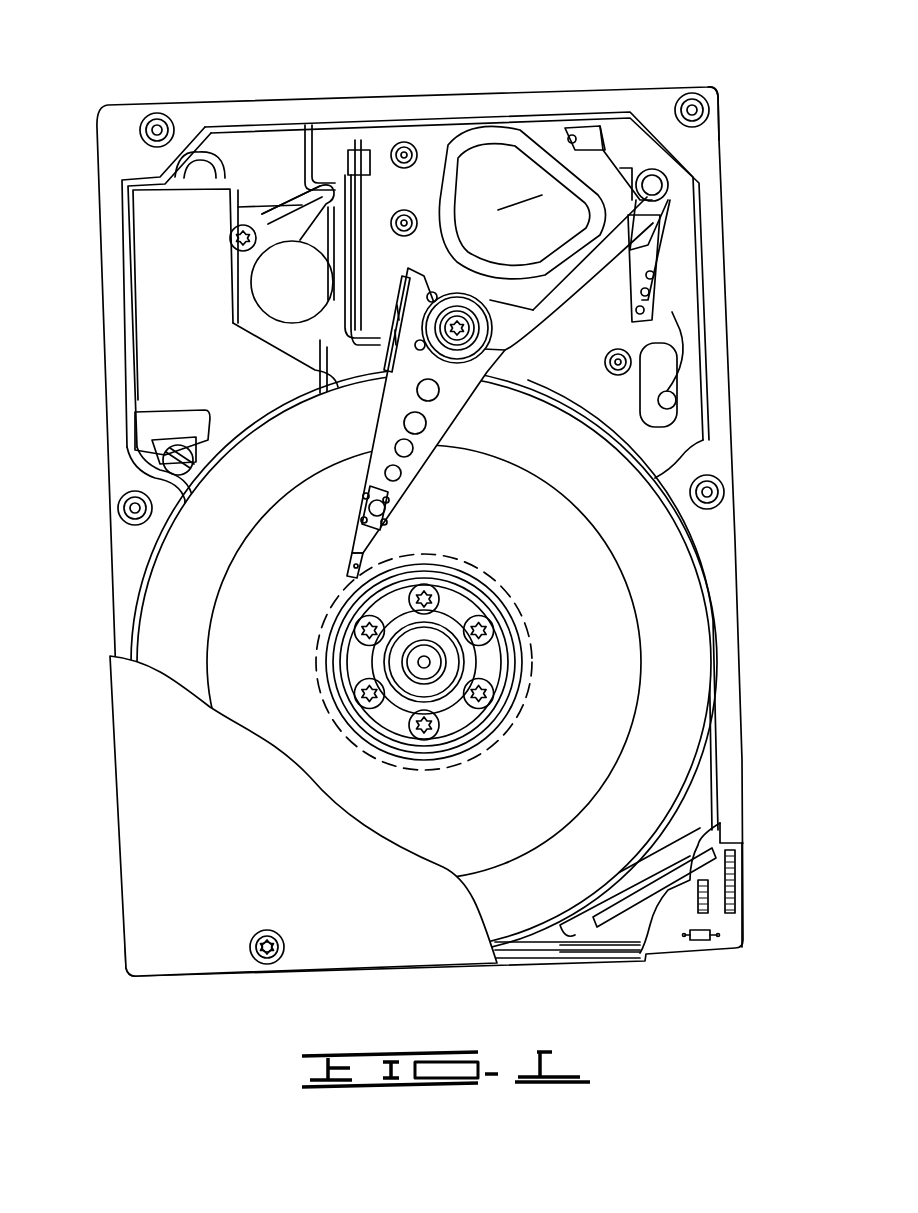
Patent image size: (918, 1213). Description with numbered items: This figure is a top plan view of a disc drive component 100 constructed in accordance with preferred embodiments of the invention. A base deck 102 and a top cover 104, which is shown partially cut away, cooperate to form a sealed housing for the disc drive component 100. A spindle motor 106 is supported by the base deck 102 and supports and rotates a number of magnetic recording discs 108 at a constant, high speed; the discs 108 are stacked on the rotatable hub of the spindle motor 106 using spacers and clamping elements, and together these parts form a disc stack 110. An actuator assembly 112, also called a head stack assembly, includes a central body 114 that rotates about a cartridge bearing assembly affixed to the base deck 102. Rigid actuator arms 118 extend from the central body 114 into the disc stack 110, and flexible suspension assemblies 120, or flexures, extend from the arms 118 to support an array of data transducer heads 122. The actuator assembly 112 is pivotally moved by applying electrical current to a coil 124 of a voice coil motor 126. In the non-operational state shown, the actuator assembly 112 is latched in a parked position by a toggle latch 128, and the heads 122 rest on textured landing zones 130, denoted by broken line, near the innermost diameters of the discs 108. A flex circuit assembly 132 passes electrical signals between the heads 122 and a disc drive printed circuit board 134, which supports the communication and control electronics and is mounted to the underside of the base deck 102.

The disc drive component 100 is at (196, 76).
The base deck 102 is at (420, 531).
The top cover 104 is at (160, 777).
The spindle motor 106 is at (437, 640).
The magnetic recording discs 108 is at (612, 695).
The disc stack 110 is at (620, 613).
The actuator assembly 112 is at (503, 344).
The central body 114 is at (477, 352).
The actuator arms 118 is at (430, 460).
The flexible suspension assemblies 120 is at (348, 535).
The data transducer heads 122 is at (338, 573).
The coil 124 is at (518, 150).
The voice coil motor 126 is at (694, 152).
The toggle latch 128 is at (683, 193).
The textured landing zones 130 is at (505, 738).
The flex circuit assembly 132 is at (252, 288).
The disc drive printed circuit board 134 is at (752, 926).